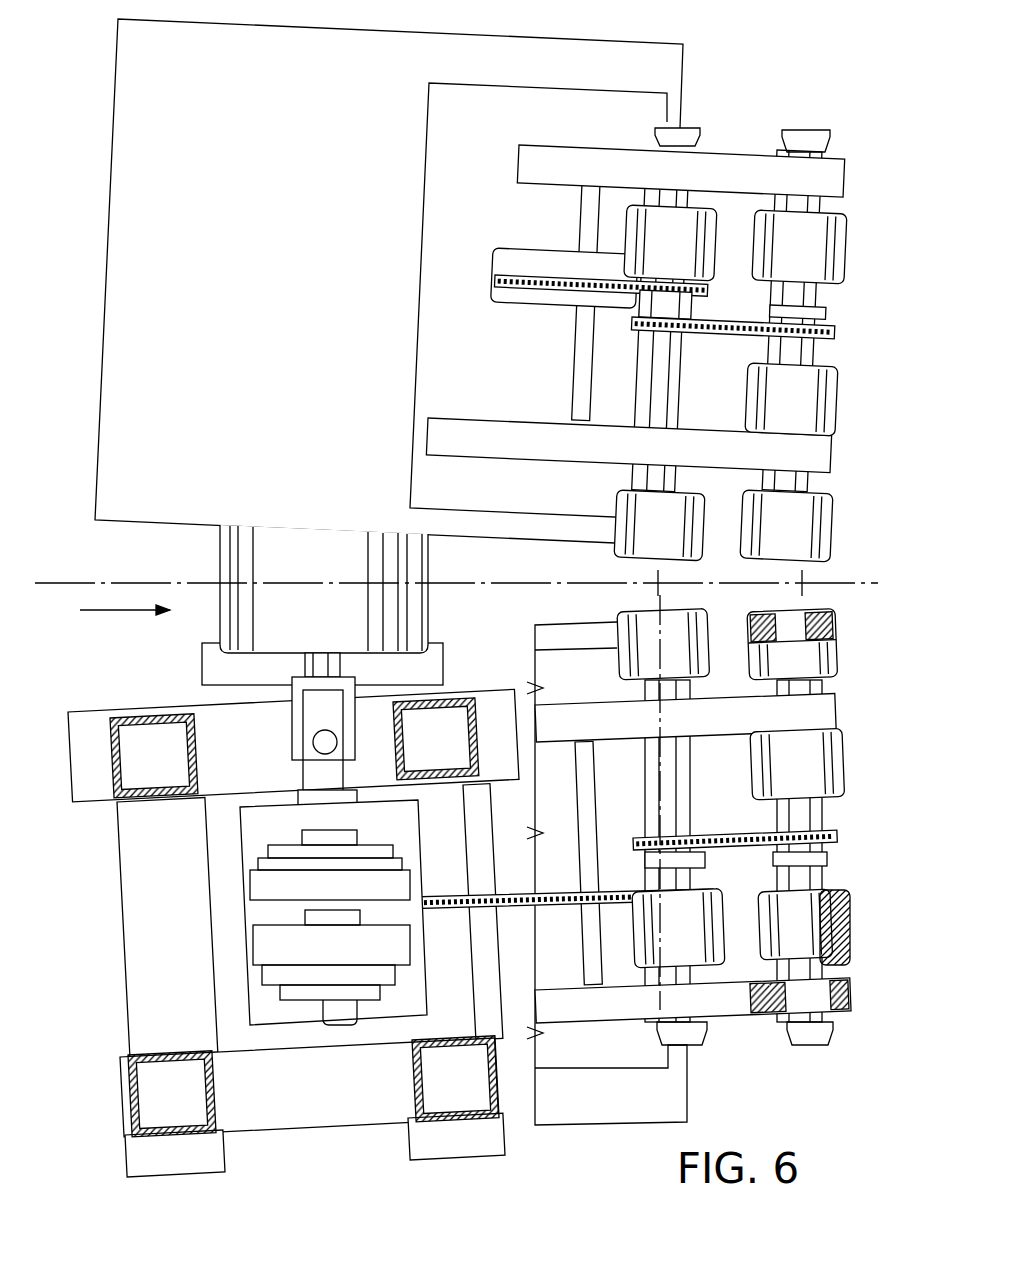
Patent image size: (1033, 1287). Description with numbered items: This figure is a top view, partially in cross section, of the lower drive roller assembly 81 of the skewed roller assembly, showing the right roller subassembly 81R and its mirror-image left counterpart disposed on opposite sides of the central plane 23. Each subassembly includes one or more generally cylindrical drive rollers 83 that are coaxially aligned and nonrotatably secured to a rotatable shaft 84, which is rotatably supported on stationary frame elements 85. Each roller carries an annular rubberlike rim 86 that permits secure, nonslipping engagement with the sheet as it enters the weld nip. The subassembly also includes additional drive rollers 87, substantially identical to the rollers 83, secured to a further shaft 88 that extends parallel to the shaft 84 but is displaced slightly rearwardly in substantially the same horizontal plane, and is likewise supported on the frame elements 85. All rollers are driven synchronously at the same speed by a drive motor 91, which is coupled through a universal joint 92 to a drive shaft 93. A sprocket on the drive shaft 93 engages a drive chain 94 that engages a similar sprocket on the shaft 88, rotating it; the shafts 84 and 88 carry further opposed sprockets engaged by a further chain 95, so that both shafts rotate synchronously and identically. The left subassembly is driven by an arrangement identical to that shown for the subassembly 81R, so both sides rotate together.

The central plane 23 is at (130, 580).
The lower drive roller assembly 81 is at (283, 275).
The right roller subassembly 81R is at (765, 1040).
The drive rollers 83 is at (812, 400).
The rotatable shaft 84 is at (805, 295).
The stationary frame elements 85 is at (808, 707).
The rubberlike rim 86 is at (847, 925).
The additional drive rollers 87 is at (633, 507).
The further shaft 88 is at (655, 364).
The drive motor 91 is at (265, 625).
The universal joint 92 is at (318, 786).
The drive shaft 93 is at (340, 1015).
The drive chain 94 is at (548, 270).
The further chain 95 is at (740, 330).